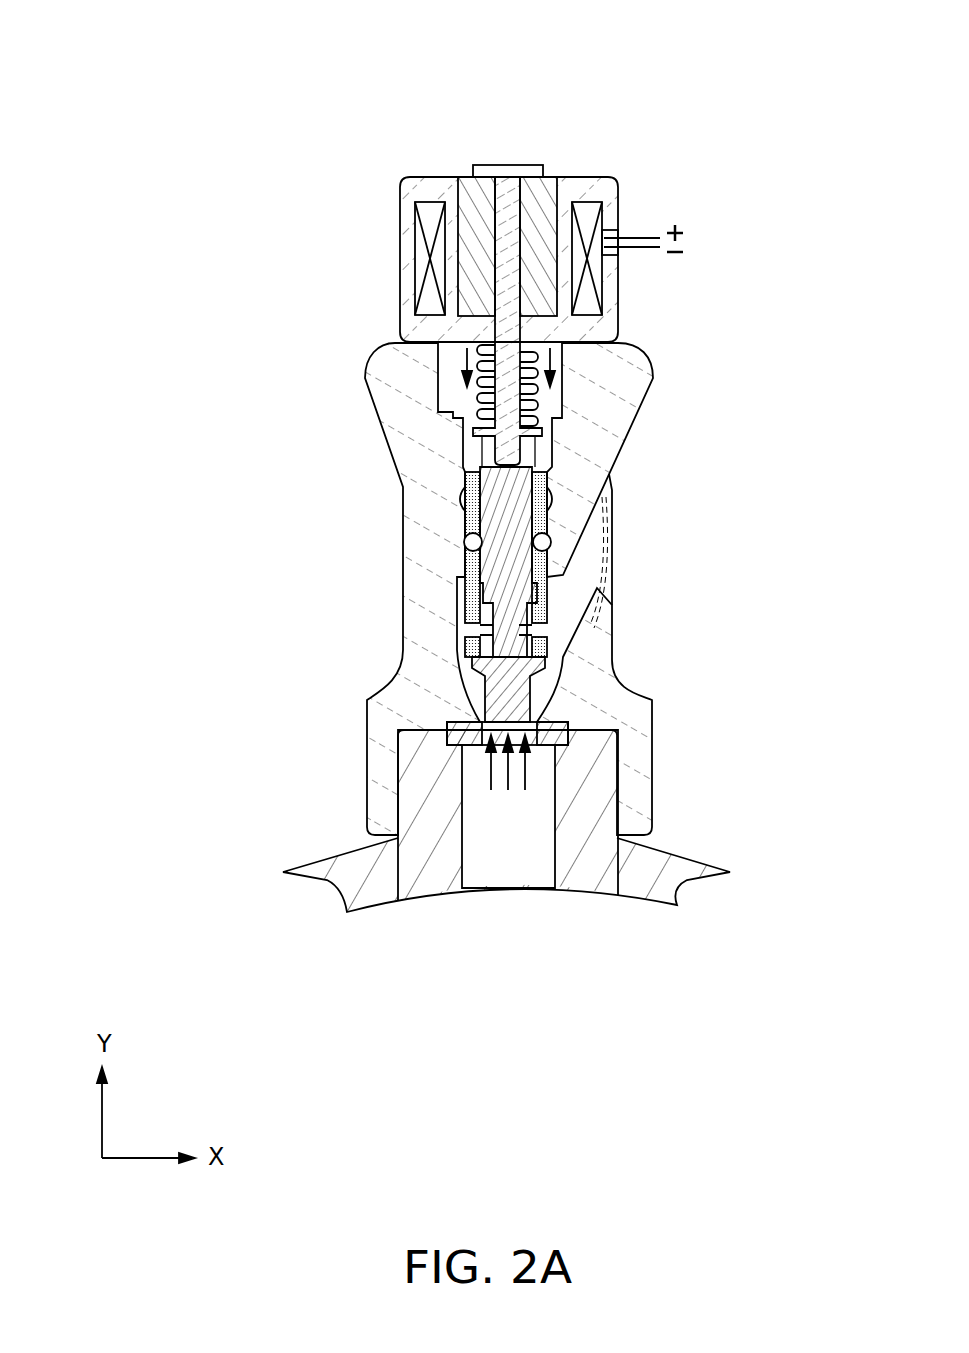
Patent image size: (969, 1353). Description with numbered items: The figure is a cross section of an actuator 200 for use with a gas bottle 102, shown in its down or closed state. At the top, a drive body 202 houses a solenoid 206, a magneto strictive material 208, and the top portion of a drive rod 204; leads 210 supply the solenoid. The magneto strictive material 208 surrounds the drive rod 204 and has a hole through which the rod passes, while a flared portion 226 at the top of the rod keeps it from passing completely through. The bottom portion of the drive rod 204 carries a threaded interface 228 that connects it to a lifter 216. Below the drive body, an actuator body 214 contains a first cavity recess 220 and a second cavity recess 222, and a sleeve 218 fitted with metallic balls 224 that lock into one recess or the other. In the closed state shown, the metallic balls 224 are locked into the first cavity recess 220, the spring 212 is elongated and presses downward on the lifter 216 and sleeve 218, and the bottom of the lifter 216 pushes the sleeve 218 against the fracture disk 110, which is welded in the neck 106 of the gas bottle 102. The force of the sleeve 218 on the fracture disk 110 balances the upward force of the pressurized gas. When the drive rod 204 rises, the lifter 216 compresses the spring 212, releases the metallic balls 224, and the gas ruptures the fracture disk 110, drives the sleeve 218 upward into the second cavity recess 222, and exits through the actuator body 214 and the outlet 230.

The actuator 200 is at (138, 121).
The drive body 202 is at (412, 192).
The drive rod 204 is at (493, 212).
The solenoid 206 is at (590, 212).
The magneto strictive material 208 is at (542, 278).
The leads 210 is at (716, 252).
The spring 212 is at (537, 387).
The actuator body 214 is at (387, 385).
The lifter 216 is at (522, 485).
The sleeve 218 is at (493, 688).
The first cavity recess 220 is at (465, 541).
The second cavity recess 222 is at (467, 497).
The metallic balls 224 is at (551, 541).
The flared portion 226 is at (545, 170).
The threaded interface 228 is at (522, 447).
The outlet 230 is at (597, 590).
The fracture disk 110 is at (568, 732).
The neck 106 is at (602, 788).
The gas bottle 102 is at (685, 863).